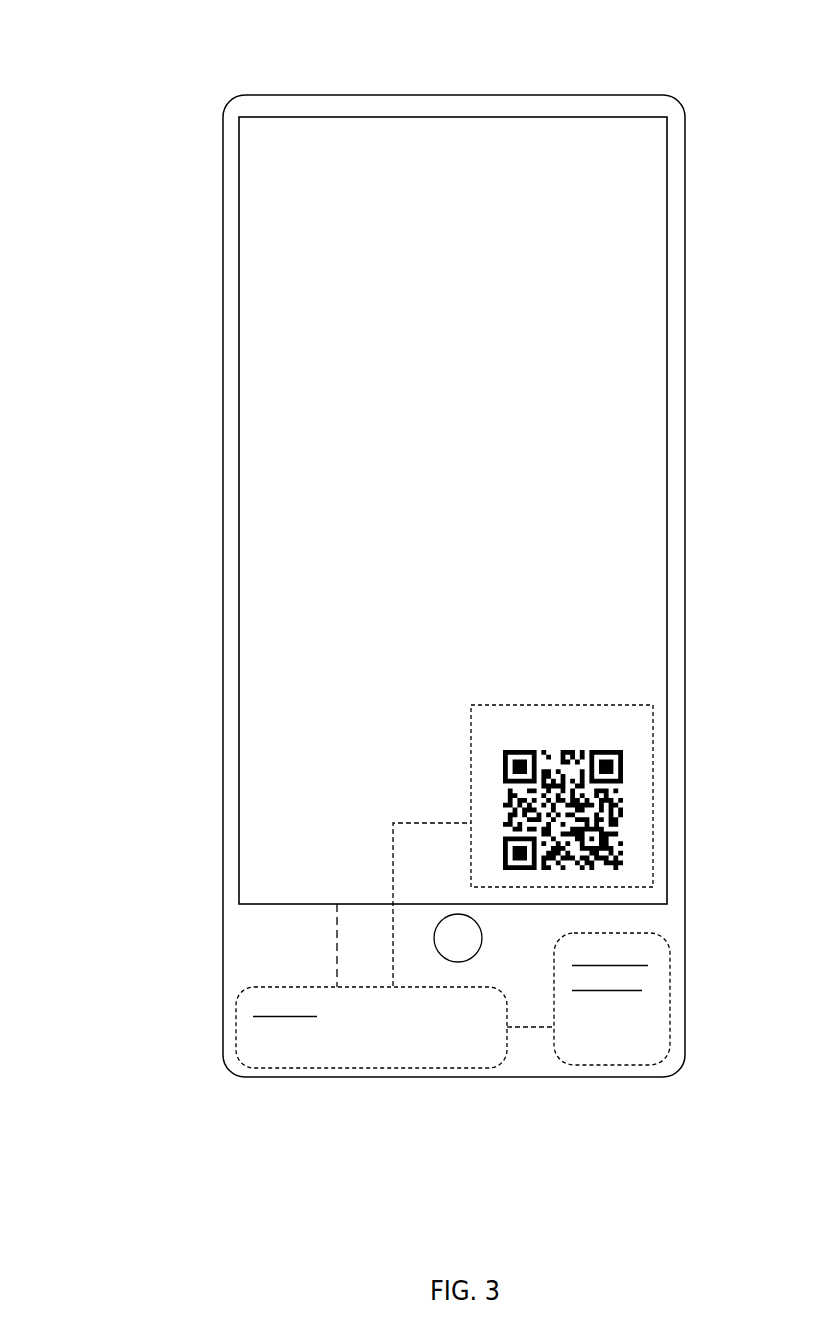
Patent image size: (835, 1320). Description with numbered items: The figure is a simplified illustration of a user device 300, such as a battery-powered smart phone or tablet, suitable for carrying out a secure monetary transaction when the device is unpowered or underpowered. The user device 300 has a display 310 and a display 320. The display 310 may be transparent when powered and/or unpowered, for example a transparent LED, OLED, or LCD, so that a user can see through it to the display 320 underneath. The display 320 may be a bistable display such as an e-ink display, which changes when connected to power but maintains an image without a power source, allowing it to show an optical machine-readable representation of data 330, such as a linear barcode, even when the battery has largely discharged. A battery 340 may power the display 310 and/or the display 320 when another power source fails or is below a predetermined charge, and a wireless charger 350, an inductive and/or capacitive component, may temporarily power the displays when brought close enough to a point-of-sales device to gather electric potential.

The user device 300 is at (103, 57).
The display 310 is at (348, 148).
The display 320 is at (578, 738).
The optical machine-readable representation of data 330 is at (623, 763).
The battery 340 is at (248, 989).
The wireless charger 350 is at (670, 980).